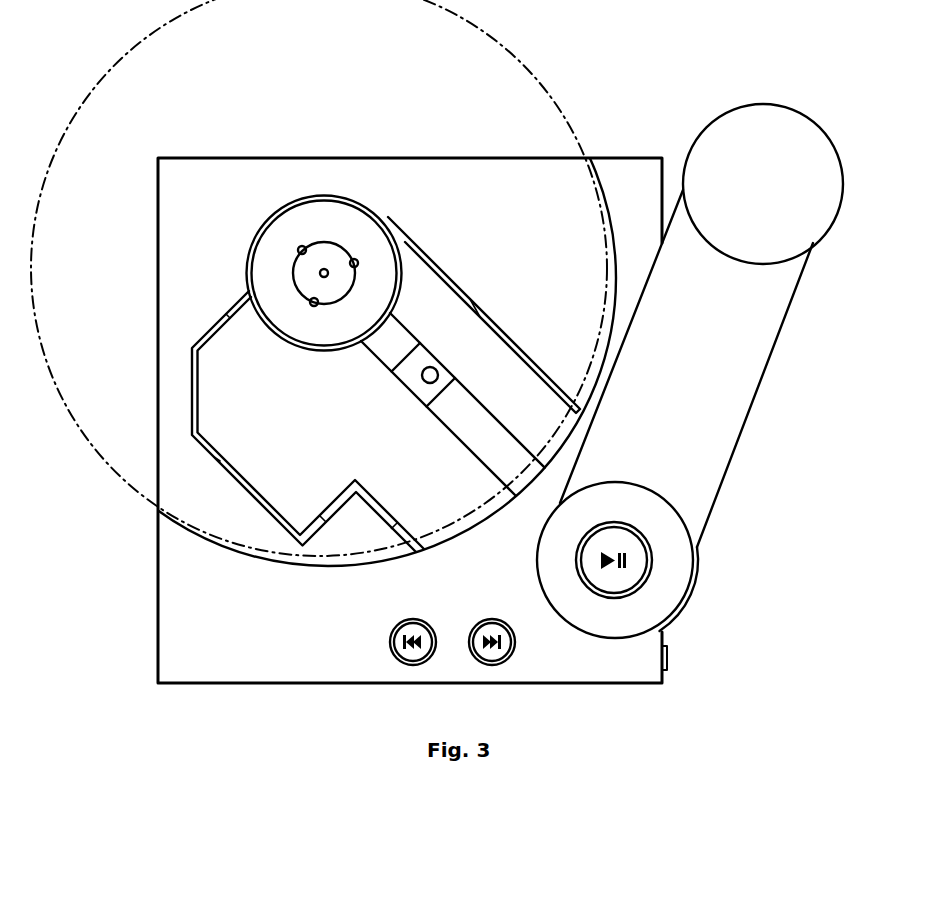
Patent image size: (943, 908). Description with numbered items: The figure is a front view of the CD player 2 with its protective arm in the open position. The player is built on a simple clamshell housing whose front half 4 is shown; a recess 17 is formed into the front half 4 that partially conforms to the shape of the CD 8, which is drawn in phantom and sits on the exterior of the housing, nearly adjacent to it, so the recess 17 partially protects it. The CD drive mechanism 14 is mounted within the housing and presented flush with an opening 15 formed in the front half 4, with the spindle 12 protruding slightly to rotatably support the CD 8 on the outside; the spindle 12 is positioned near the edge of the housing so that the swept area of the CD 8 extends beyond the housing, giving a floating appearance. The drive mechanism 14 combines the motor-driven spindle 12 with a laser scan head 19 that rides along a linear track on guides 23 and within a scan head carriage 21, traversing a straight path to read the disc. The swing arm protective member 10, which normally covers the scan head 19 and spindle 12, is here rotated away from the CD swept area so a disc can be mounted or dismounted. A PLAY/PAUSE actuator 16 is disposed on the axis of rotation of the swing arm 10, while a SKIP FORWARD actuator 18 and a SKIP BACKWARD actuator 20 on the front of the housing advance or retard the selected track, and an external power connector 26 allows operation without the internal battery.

The CD player 2 is at (88, 594).
The front half of the housing 4 is at (158, 670).
The CD 8 is at (66, 412).
The swing arm protective member 10 is at (752, 404).
The spindle 12 is at (293, 274).
The CD drive mechanism 14 is at (222, 470).
The opening 15 is at (243, 493).
The PLAY/PAUSE actuator 16 is at (598, 597).
The recess 17 is at (599, 163).
The SKIP FORWARD actuator 18 is at (480, 624).
The laser scan head 19 is at (422, 368).
The SKIP BACKWARD actuator 20 is at (398, 622).
The scan head carriage 21 is at (440, 402).
The guides 23 is at (470, 297).
The external power connector 26 is at (668, 656).